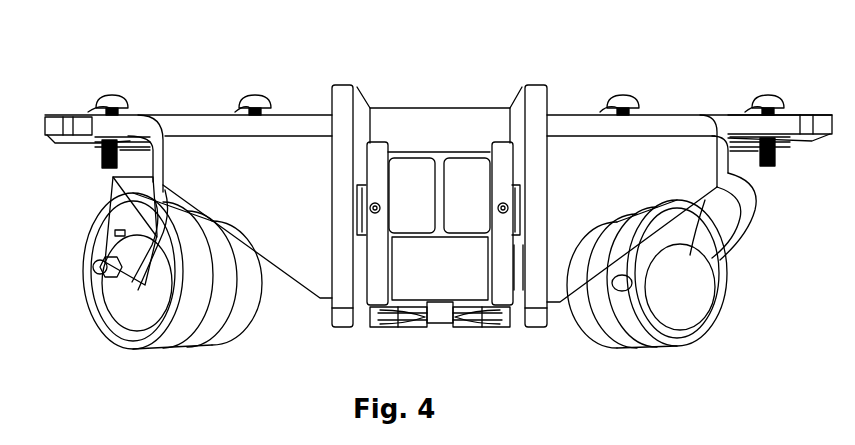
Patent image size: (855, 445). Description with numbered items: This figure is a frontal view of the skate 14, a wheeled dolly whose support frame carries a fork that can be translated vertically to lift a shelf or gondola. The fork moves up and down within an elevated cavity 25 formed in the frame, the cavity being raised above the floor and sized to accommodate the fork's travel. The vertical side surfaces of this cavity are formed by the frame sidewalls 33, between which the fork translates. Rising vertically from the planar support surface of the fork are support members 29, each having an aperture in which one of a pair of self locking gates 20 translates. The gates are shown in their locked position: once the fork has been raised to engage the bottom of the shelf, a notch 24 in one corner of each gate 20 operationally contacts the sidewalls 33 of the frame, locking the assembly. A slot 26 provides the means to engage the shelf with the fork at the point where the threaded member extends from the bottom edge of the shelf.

The skate 14 is at (660, 130).
The self locking gates 20 is at (462, 177).
The notch 24 is at (360, 205).
The elevated cavity 25 is at (517, 262).
The slot 26 is at (440, 327).
The support members 29 is at (498, 142).
The frame sidewalls 33 is at (362, 108).